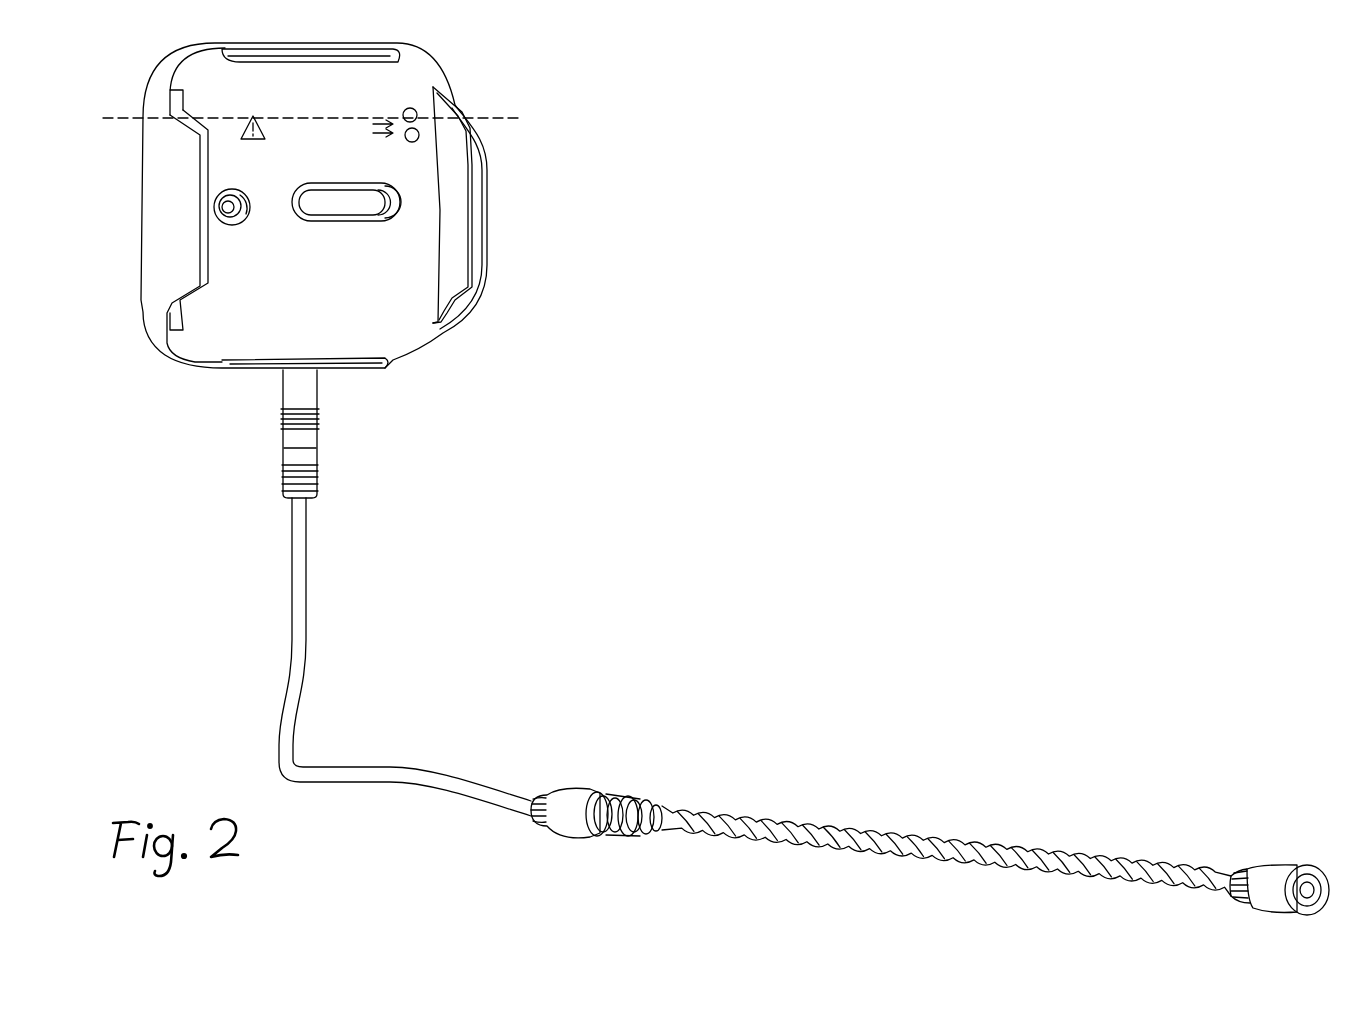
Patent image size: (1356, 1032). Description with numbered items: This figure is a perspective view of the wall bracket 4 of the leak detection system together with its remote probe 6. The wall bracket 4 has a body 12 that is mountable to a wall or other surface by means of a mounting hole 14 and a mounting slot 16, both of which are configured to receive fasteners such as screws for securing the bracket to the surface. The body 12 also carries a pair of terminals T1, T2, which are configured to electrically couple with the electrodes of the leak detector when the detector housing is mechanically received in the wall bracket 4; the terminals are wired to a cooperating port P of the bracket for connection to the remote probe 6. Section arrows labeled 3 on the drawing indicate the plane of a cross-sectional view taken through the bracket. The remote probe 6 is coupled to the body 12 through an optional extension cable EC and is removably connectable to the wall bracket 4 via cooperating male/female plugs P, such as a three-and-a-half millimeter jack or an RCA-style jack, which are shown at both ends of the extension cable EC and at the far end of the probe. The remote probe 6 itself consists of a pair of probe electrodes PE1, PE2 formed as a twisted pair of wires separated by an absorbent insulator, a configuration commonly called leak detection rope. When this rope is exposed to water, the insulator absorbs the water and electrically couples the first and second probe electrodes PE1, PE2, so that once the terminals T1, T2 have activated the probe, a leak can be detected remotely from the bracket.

The wall bracket 4 is at (122, 70).
The section line 3- 3 is at (97, 150).
The body 12 is at (367, 316).
The mounting hole 14 is at (251, 224).
The mounting slot 16 is at (340, 208).
The terminal T1 is at (407, 108).
The terminal T2 is at (410, 143).
The plug P is at (294, 393).
The extension cable EC is at (306, 568).
The remote probe 6 is at (1016, 841).
The probe electrode PE1 is at (774, 824).
The probe electrode PE2 is at (833, 848).